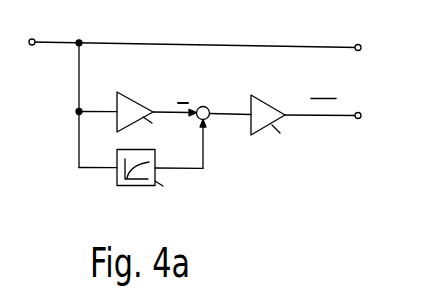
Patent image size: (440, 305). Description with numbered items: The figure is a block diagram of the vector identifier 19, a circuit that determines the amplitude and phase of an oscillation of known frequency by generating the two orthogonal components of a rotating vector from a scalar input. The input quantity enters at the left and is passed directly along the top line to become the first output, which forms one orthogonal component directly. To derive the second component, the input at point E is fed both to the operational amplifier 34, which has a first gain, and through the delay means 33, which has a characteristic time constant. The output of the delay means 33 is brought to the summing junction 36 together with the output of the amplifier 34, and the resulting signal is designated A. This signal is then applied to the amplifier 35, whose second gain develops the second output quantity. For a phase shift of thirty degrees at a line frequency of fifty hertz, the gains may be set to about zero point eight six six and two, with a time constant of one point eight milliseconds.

The vector identifier 19 is at (279, 194).
The delay means 33 is at (132, 186).
The operational amplifier 34 is at (135, 99).
The amplifier 35 is at (268, 103).
The summing junction 36 is at (203, 105).